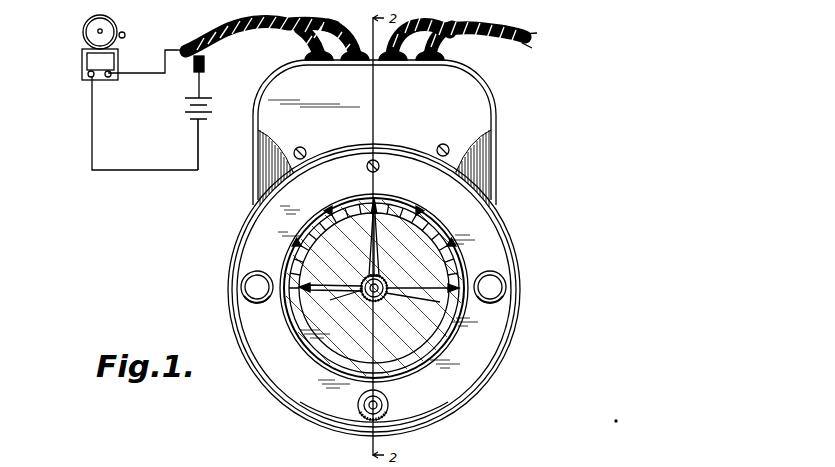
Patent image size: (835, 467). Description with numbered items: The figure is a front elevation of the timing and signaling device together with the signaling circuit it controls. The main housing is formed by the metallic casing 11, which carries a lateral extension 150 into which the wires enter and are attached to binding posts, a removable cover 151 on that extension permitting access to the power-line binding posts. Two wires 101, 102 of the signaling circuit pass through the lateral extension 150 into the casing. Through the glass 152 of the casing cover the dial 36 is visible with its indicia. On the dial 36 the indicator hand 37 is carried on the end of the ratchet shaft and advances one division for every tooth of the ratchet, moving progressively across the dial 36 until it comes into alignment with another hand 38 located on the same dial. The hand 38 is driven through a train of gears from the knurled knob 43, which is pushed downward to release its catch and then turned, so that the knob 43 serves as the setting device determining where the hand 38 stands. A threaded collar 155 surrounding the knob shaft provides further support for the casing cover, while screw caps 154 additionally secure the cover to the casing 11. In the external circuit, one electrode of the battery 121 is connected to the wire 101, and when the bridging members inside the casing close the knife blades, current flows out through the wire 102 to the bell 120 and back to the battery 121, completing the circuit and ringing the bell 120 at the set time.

The bell 120 is at (124, 36).
The battery 121 is at (202, 113).
The wire 101 is at (303, 24).
The wire 102 is at (330, 36).
The removable cover 151 is at (467, 111).
The lateral extension 150 is at (497, 157).
The metallic casing 11 is at (516, 262).
The screw caps 154 is at (247, 291).
The glass 152 is at (383, 337).
The hand 38 is at (382, 258).
The indicator hand 37 is at (355, 290).
The dial 36 is at (448, 320).
The knurled knob 43 is at (393, 393).
The threaded collar 155 is at (393, 427).